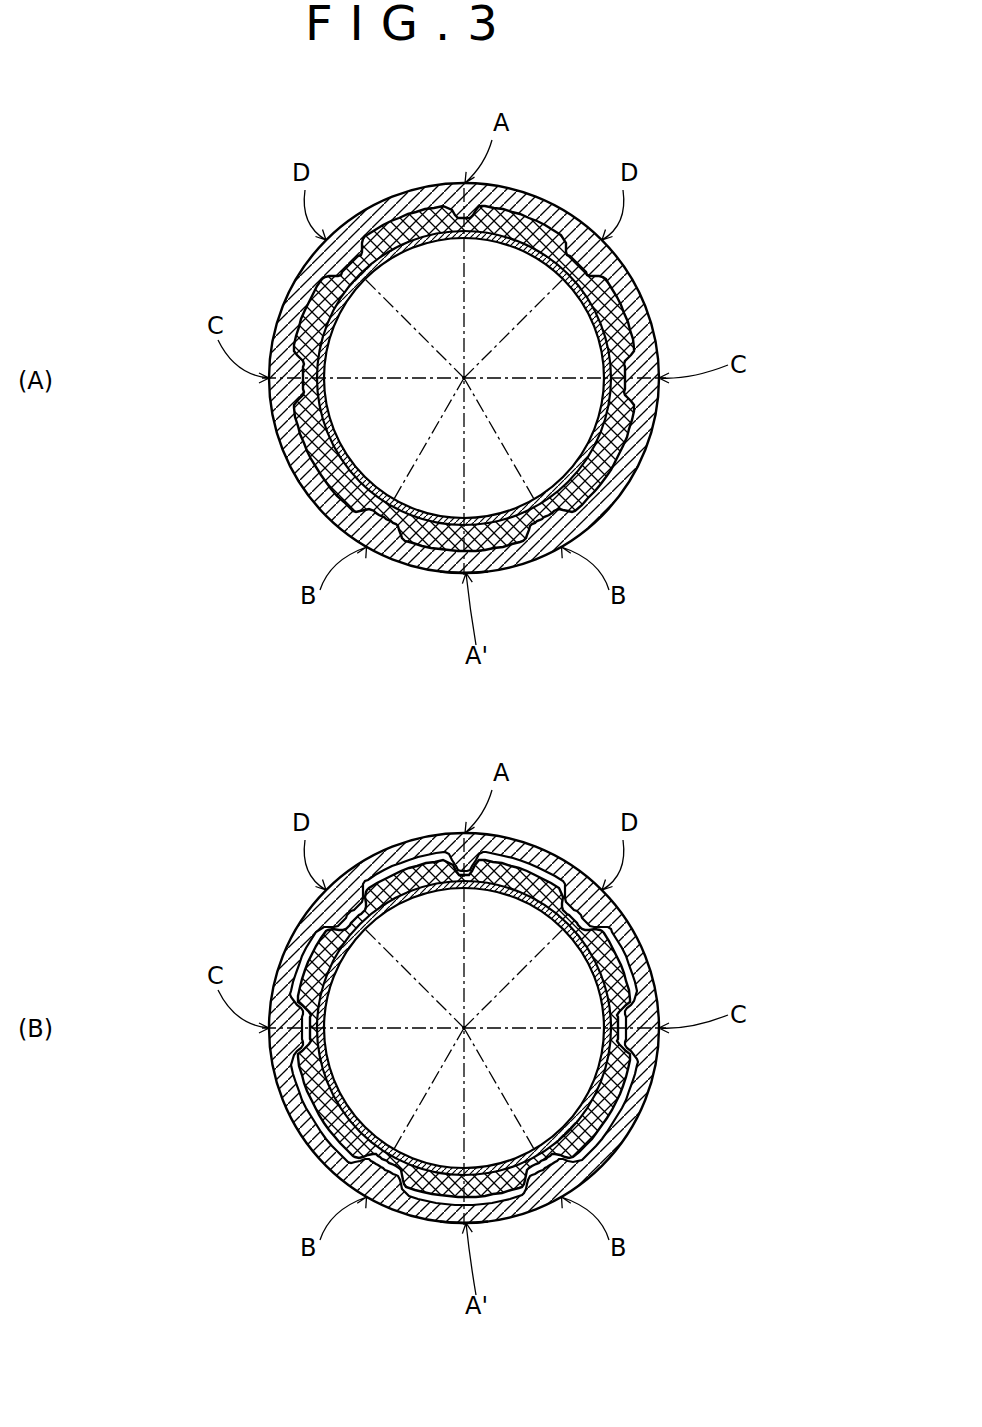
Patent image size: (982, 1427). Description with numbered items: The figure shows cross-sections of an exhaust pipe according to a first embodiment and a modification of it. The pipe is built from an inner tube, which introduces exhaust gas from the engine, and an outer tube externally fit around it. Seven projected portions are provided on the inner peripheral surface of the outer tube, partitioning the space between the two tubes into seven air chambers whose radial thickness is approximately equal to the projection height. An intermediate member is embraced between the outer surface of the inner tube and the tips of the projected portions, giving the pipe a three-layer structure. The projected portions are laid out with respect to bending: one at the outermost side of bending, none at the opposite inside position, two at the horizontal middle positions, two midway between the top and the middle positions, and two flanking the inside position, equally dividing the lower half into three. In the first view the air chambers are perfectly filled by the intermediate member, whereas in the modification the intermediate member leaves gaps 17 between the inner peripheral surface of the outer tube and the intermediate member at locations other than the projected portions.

The gaps 17 is at (606, 1132).